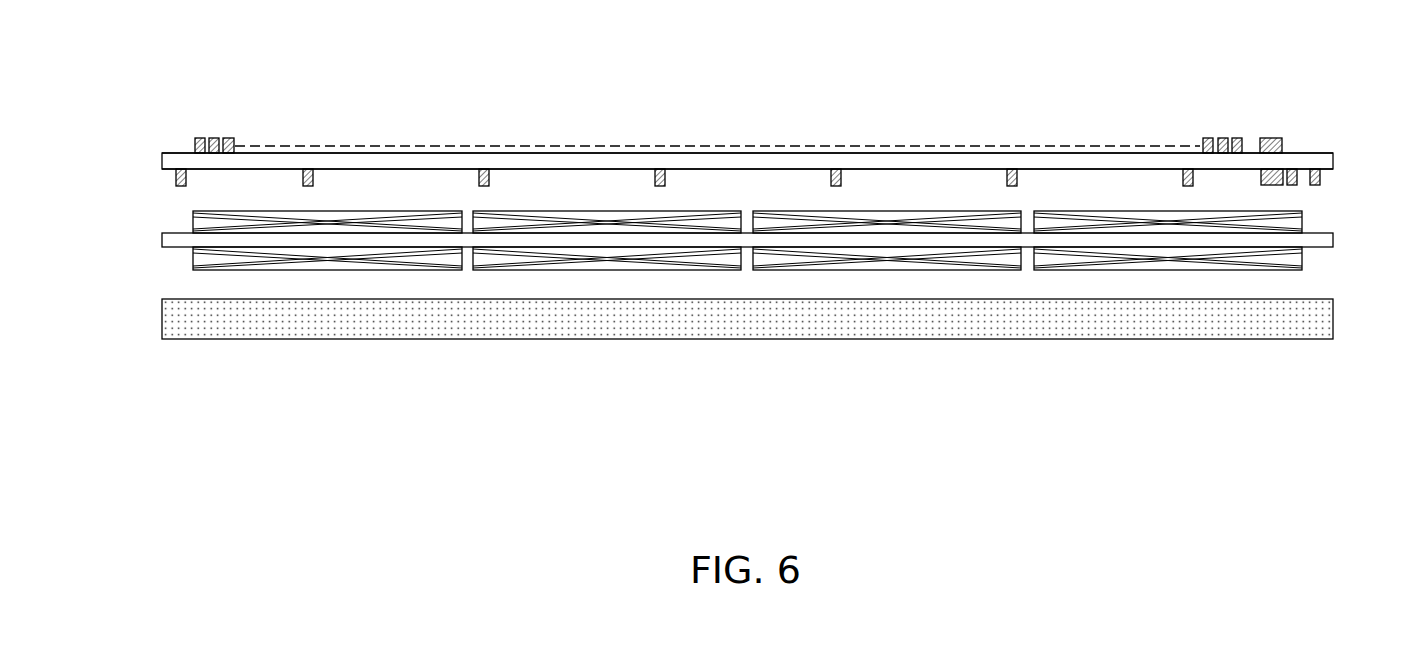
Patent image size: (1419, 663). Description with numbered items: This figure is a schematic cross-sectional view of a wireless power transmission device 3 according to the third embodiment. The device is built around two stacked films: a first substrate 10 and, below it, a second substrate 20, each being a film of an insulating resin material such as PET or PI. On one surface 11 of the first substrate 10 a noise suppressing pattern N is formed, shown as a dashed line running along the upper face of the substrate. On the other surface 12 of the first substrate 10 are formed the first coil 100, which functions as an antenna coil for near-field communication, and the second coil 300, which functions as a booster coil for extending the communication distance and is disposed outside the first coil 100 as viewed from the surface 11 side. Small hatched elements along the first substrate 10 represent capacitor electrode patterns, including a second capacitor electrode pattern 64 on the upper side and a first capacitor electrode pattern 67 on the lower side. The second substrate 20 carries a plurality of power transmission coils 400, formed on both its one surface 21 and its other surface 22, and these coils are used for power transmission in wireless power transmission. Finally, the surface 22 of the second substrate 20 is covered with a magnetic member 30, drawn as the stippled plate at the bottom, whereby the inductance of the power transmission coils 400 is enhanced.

The wireless power transmission device 3 is at (1163, 30).
The noise suppressing pattern N is at (358, 134).
The first substrate 10 is at (776, 145).
The surface of the first substrate 11 is at (748, 152).
The surface of the first substrate 12 is at (747, 170).
The first coil 100 is at (860, 180).
The second coil 300 is at (175, 177).
The second capacitor electrode pattern 64 is at (1272, 137).
The first capacitor electrode pattern 67 is at (1273, 186).
The second substrate 20 is at (1335, 243).
The surface of the second substrate 21 is at (168, 232).
The surface of the second substrate 22 is at (168, 248).
The power transmission coil 400 is at (748, 232).
The magnetic member 30 is at (1335, 321).